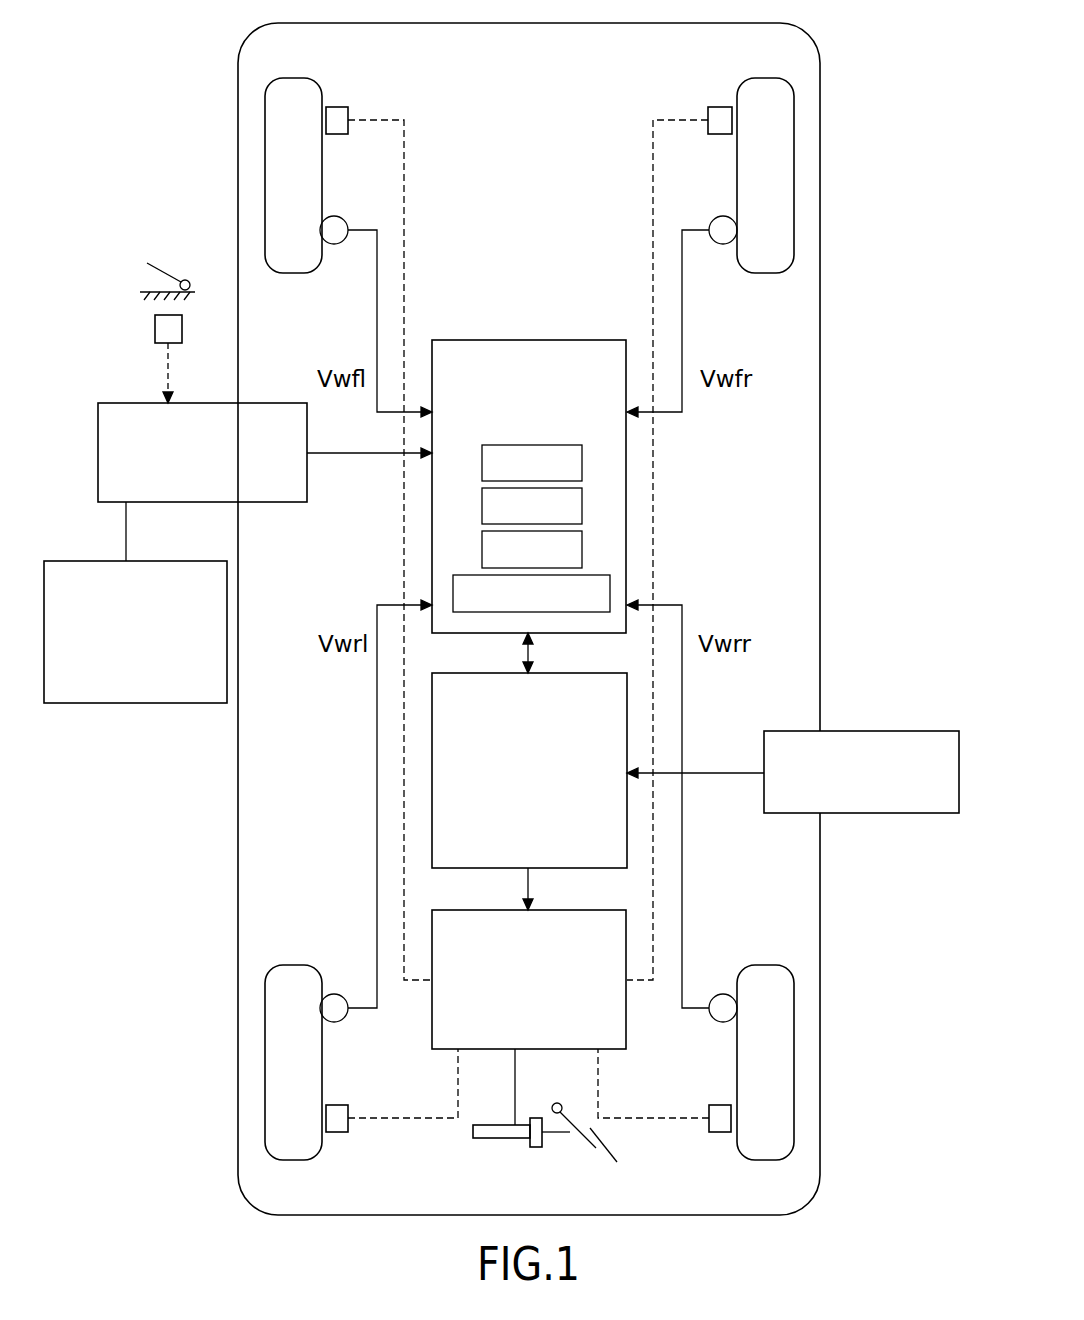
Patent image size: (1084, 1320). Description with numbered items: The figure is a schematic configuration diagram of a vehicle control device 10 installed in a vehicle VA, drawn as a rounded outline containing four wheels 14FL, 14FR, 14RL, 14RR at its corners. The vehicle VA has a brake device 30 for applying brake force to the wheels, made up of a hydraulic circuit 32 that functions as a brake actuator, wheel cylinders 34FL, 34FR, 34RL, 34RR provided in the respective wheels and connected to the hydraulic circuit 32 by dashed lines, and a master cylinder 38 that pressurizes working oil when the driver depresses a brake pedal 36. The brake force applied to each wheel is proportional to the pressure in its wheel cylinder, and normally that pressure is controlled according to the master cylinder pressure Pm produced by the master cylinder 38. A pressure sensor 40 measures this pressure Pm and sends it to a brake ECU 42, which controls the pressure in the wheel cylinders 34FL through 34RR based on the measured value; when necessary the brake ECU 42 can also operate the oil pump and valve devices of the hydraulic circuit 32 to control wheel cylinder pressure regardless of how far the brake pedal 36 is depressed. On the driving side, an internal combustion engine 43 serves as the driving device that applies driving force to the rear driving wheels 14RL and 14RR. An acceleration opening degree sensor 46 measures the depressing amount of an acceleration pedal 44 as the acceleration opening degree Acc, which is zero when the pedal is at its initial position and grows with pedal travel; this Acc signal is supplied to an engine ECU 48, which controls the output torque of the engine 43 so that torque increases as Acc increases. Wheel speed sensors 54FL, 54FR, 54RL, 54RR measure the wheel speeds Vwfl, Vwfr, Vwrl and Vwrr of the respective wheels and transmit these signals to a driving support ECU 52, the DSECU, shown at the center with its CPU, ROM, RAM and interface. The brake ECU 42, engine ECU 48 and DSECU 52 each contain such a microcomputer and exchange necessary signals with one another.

The vehicle control device 10 is at (850, 266).
The vehicle VA is at (821, 127).
The front left wheel 14FL is at (265, 146).
The front right wheel 14FR is at (793, 187).
The rear left wheel 14RL is at (265, 1068).
The rear right wheel 14RR is at (793, 1070).
The brake device 30 is at (452, 1150).
The hydraulic circuit 32 is at (516, 1022).
The front left wheel cylinder 34FL is at (337, 115).
The front right wheel cylinder 34FR is at (718, 115).
The rear left wheel cylinder 34RL is at (337, 1112).
The rear right wheel cylinder 34RR is at (722, 1113).
The brake pedal 36 is at (612, 1150).
The master cylinder 38 is at (487, 1138).
The pressure sensor 40 is at (887, 813).
The brake ECU 42 is at (517, 798).
The internal combustion engine 43 is at (167, 561).
The acceleration pedal 44 is at (157, 265).
The acceleration opening degree sensor 46 is at (155, 327).
The engine ECU 48 is at (307, 480).
The driving support ECU 52 is at (589, 430).
The front left wheel speed sensor 54FL is at (337, 243).
The front right wheel speed sensor 54FR is at (720, 243).
The rear left wheel speed sensor 54RL is at (337, 1000).
The rear right wheel speed sensor 54RR is at (720, 1000).